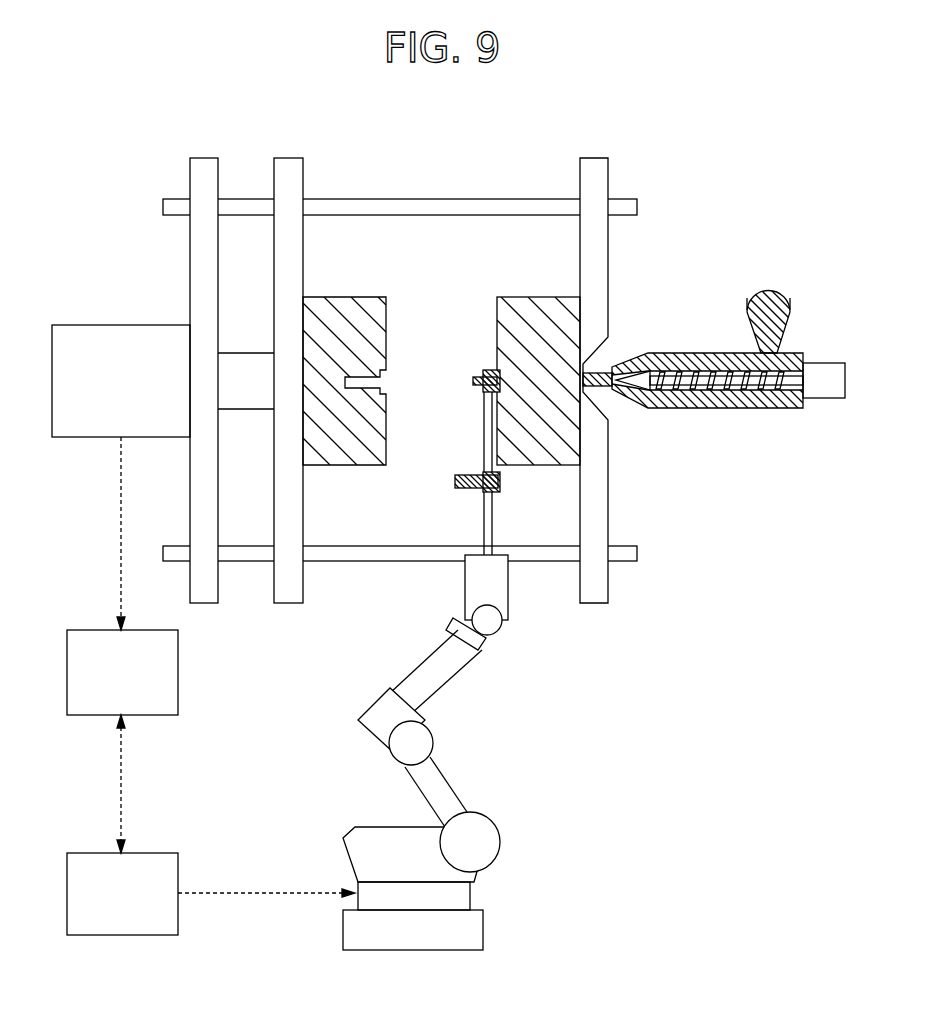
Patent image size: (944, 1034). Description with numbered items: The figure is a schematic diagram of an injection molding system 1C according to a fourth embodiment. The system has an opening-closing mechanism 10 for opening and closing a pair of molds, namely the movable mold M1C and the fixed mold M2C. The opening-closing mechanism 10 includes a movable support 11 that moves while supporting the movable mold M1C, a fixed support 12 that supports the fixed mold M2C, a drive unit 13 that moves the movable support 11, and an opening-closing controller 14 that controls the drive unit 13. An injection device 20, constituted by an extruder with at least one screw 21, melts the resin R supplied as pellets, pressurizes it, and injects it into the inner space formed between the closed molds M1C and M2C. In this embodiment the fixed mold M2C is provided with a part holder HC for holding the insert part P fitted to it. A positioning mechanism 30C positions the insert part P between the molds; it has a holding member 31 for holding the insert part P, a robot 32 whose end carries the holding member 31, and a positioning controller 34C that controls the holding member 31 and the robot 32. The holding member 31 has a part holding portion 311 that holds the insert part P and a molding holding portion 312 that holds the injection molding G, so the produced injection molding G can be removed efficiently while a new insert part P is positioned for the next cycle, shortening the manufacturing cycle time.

The injection molding system 1C is at (780, 180).
The opening-closing mechanism 10 is at (462, 193).
The movable support 11 is at (303, 187).
The fixed support 12 is at (580, 186).
The drive unit 13 is at (121, 325).
The opening-closing controller 14 is at (80, 630).
The injection device 20 is at (688, 333).
The screw 21 is at (722, 408).
The resin R is at (769, 304).
The movable mold M1C is at (340, 297).
The fixed mold M2C is at (537, 297).
The part holder HC is at (495, 372).
The holding member 31 is at (493, 508).
The part holding portion 311 is at (480, 386).
The molding holding portion 312 is at (482, 490).
The insert part P is at (472, 380).
The injection molding G is at (457, 480).
The positioning mechanism 30C is at (348, 693).
The robot 32 is at (455, 778).
The positioning controller 34C is at (78, 853).